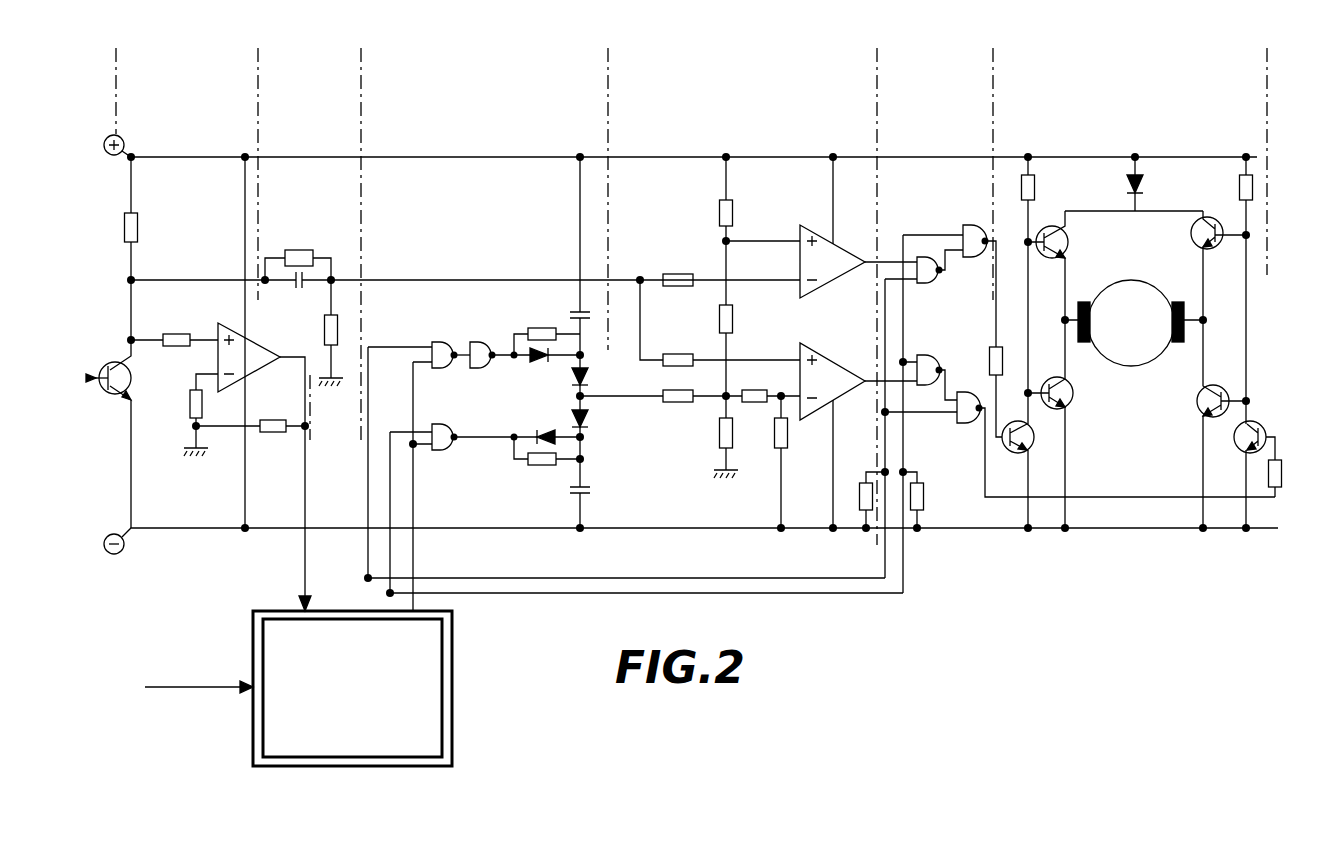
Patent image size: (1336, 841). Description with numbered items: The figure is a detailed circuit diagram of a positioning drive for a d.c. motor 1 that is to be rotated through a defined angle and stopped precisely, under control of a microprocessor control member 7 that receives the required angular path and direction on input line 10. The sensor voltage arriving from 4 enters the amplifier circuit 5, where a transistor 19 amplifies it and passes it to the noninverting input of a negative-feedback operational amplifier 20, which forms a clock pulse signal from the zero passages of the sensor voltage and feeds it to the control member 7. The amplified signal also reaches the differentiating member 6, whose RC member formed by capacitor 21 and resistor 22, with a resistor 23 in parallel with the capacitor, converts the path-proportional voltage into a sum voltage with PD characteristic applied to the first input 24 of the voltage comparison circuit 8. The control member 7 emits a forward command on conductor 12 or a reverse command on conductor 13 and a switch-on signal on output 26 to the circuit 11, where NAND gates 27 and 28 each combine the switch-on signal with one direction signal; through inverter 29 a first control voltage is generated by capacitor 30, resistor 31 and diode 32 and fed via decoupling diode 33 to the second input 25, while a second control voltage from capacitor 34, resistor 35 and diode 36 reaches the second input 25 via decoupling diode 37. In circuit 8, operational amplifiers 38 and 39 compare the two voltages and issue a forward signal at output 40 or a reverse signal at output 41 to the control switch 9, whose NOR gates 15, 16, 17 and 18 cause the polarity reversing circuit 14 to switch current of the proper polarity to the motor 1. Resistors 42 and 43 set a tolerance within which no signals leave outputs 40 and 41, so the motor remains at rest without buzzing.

The d.c. motor 1 is at (1121, 339).
The sensor (from 4) 4 is at (88, 372).
The amplifier circuit 5 is at (198, 338).
The differentiating member 6 is at (465, 226).
The control member 7 is at (341, 703).
The voltage comparison circuit 8 is at (764, 297).
The control switch 9 is at (1068, 329).
The input line 10 is at (186, 687).
The circuit 11 is at (610, 338).
The conductor 12 is at (365, 577).
The conductor 13 is at (385, 603).
The polarity reversing circuit 14 is at (1142, 297).
The NOR gate 15 is at (965, 426).
The NOR gate 16 is at (927, 284).
The NOR gate 17 is at (975, 232).
The NOR gate 18 is at (933, 380).
The transistor 19 is at (112, 393).
The operational amplifier 20 is at (218, 328).
The capacitor 21 is at (295, 286).
The resistor 22 is at (326, 332).
The resistor 23 is at (301, 256).
The first input 24 is at (630, 278).
The second input 25 is at (632, 398).
The output 26 is at (416, 546).
The NAND gate 27 is at (437, 345).
The NAND gate 28 is at (445, 424).
The inverter 29 is at (475, 345).
The capacitor 30 is at (574, 312).
The resistor 31 is at (540, 333).
The diode 32 is at (542, 361).
The decoupling diode 33 is at (590, 377).
The capacitor 34 is at (590, 491).
The resistor 35 is at (540, 466).
The diode 36 is at (545, 431).
The decoupling diode 37 is at (590, 426).
The operational amplifier 38 is at (840, 262).
The operational amplifier 39 is at (840, 378).
The output 40 is at (882, 262).
The output 41 is at (880, 383).
The resistor 42 is at (720, 210).
The resistor 43 is at (785, 441).